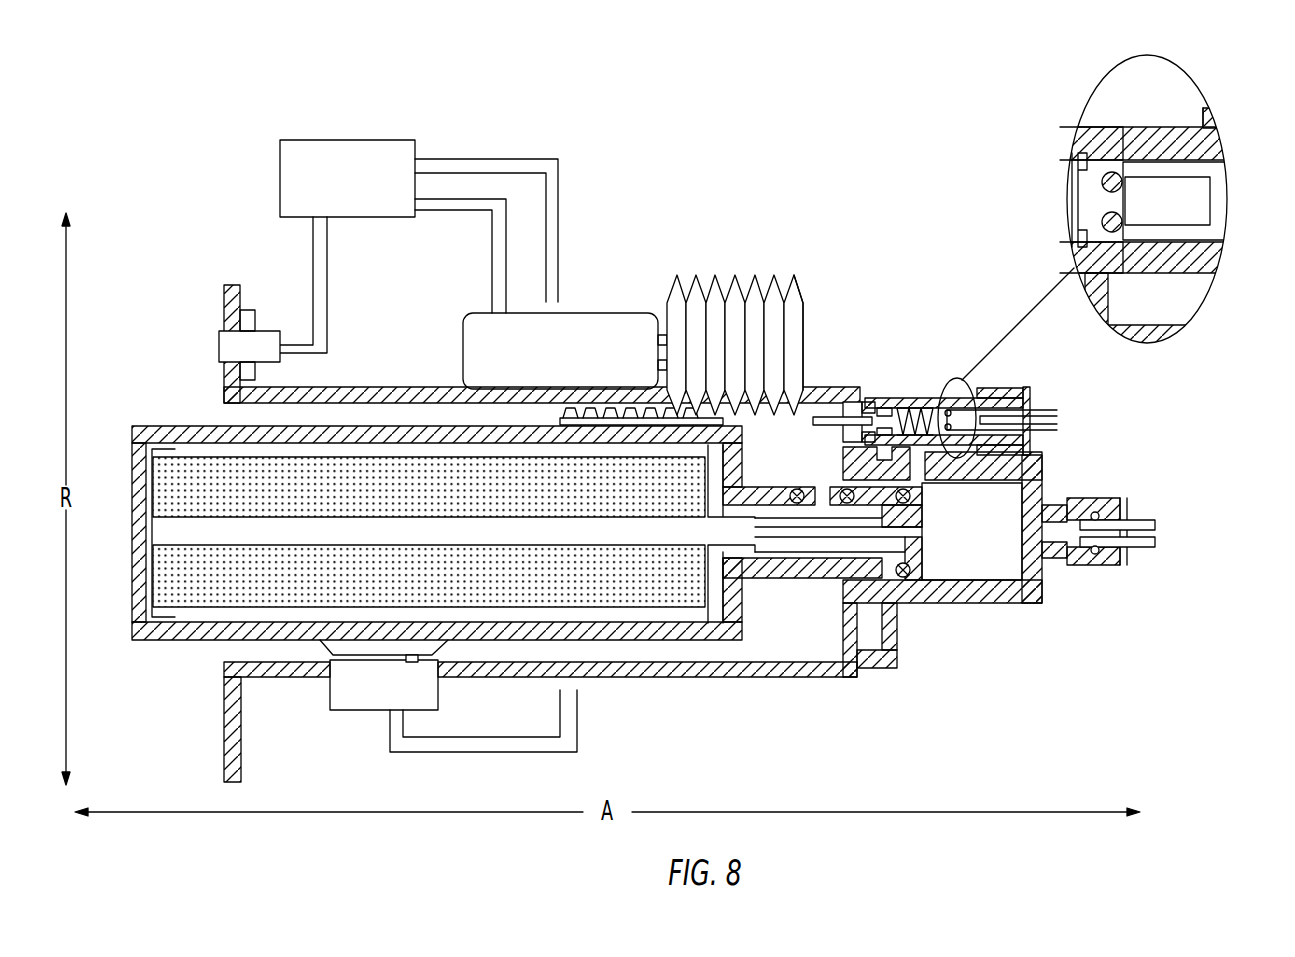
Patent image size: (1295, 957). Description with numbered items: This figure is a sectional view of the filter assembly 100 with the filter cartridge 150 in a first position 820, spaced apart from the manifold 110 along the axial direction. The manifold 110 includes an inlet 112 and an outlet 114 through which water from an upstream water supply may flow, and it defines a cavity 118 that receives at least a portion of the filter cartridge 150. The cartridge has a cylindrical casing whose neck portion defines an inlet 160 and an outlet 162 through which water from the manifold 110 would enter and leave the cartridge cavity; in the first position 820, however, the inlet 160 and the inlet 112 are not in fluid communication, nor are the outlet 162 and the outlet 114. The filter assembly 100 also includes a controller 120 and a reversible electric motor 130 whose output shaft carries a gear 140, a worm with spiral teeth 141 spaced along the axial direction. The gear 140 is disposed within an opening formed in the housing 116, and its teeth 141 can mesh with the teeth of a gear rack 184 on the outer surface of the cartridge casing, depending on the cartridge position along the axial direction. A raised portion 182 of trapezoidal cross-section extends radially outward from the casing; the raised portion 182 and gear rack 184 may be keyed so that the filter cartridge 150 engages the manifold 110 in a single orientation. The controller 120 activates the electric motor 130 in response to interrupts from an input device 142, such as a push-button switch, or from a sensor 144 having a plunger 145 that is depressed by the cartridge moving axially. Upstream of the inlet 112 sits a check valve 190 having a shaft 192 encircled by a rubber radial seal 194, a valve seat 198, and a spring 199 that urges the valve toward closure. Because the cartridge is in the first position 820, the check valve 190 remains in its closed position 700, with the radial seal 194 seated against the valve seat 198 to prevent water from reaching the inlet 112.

The filter assembly 100 is at (222, 170).
The manifold 110 is at (990, 605).
The inlet 112 is at (930, 473).
The outlet 114 is at (1155, 540).
The housing 116 is at (808, 678).
The cavity 118 is at (954, 564).
The controller 120 is at (329, 193).
The electric motor 130 is at (544, 366).
The gear 140 is at (805, 328).
The spiral teeth 141 is at (794, 292).
The input device 142 is at (224, 346).
The sensor 144 is at (369, 699).
The plunger 145 is at (413, 665).
The filter cartridge 150 is at (140, 641).
The inlet 160 is at (822, 488).
The outlet 162 is at (913, 533).
The raised portion 182 is at (327, 650).
The gear rack 184 is at (718, 420).
The check valve 190 is at (957, 378).
The shaft 192 is at (1204, 199).
The radial seal 194 is at (1104, 181).
The valve seat 198 is at (1103, 158).
The spring 199 is at (915, 400).
The closed position 700 is at (1102, 97).
The first position 820 is at (184, 657).